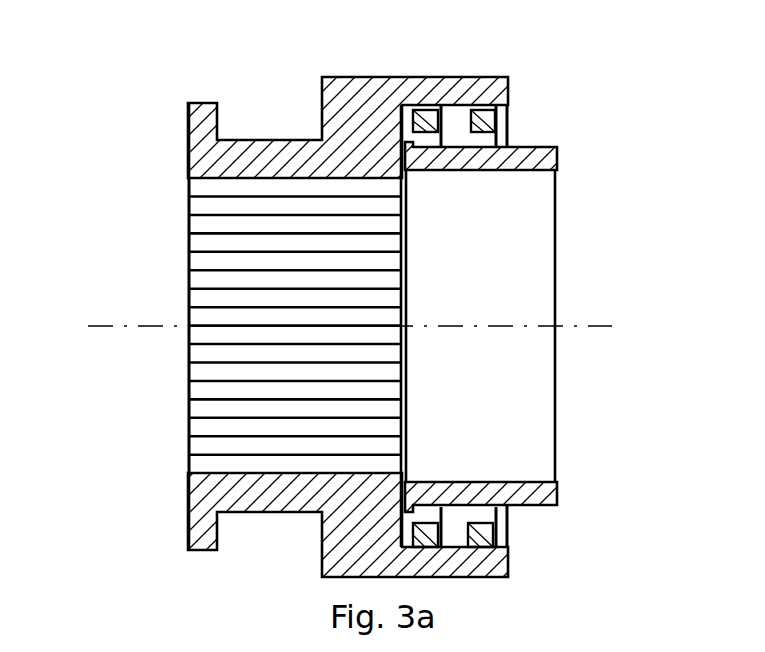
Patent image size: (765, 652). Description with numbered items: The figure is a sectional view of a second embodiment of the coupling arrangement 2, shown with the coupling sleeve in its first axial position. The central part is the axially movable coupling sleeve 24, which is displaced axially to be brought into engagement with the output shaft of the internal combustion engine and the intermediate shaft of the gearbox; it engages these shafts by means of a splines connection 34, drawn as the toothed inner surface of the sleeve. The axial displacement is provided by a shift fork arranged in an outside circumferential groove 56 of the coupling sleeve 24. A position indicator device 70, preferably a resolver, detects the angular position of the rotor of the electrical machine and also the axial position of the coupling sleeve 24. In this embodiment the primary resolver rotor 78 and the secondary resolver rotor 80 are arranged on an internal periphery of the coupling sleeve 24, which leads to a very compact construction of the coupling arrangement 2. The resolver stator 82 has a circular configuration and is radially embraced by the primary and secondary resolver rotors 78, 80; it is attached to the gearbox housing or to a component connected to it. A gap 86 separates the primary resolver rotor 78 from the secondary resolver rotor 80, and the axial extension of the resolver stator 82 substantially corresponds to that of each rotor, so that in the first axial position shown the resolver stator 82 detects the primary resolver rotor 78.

The coupling arrangement 2 is at (238, 571).
The axially movable coupling sleeve 24 is at (510, 560).
The splines connection 34 is at (207, 432).
The outside circumferential groove 56 is at (258, 140).
The position indicator device 70 is at (573, 532).
The primary resolver rotor 78 is at (422, 115).
The secondary resolver rotor 80 is at (493, 123).
The resolver stator 82 is at (557, 163).
The gap 86 is at (448, 107).